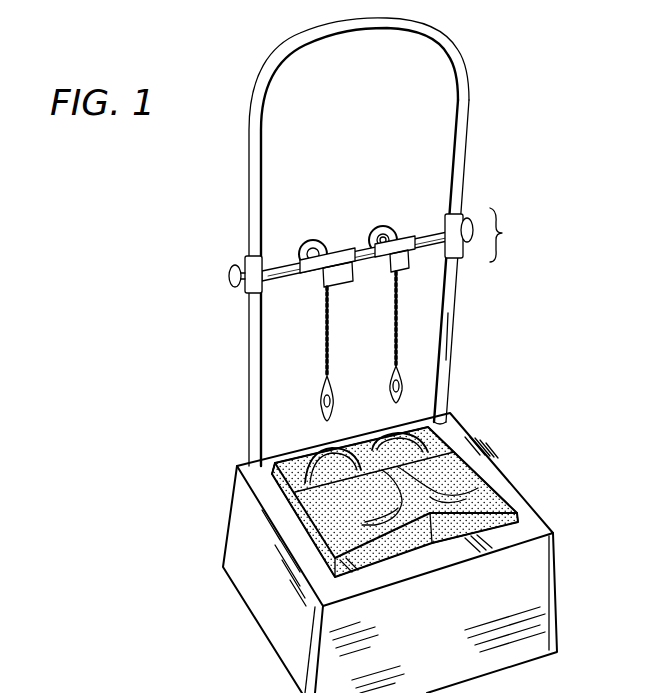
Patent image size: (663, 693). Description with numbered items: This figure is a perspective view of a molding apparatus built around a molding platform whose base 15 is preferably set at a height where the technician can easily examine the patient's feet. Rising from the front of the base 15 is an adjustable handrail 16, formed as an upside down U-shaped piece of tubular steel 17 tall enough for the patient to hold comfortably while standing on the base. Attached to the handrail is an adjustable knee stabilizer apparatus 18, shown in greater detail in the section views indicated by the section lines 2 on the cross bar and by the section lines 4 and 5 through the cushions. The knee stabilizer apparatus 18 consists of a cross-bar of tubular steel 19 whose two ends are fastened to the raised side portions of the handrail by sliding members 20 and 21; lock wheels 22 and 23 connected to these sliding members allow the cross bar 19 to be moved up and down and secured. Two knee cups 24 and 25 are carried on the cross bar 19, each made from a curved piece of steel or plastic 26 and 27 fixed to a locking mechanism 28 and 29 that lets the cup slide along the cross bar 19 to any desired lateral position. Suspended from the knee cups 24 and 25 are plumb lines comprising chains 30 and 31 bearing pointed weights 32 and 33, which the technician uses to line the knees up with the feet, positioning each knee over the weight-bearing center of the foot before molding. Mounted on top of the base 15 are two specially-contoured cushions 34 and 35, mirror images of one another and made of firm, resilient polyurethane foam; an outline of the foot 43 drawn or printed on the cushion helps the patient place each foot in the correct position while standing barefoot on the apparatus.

The base 15 is at (229, 498).
The adjustable handrail 16 is at (466, 66).
The upside down U-shaped piece of tubular steel 17 is at (273, 70).
The adjustable knee stabilizer apparatus 18 is at (514, 235).
The cross-bar of tubular steel 19 is at (356, 252).
The sliding member 20 is at (252, 292).
The sliding member 21 is at (462, 258).
The lock wheel 22 is at (228, 270).
The lock wheel 23 is at (462, 215).
The knee cup 24 is at (323, 288).
The knee cup 25 is at (448, 313).
The curved piece of steel or plastic 26 is at (328, 292).
The curved piece of steel or plastic 27 is at (422, 225).
The locking mechanism 28 is at (298, 246).
The locking mechanism 29 is at (372, 236).
The chain 30 is at (326, 357).
The chain 31 is at (400, 343).
The pointed weight 32 is at (325, 398).
The pointed weight 33 is at (404, 386).
The specially-contoured cushion 34 is at (305, 520).
The specially-contoured cushion 35 is at (472, 471).
The outline of the foot 43 is at (405, 445).
The section line 2- 2 is at (302, 218).
The section line 4- 4 is at (556, 482).
The section line 5- 5 is at (356, 424).